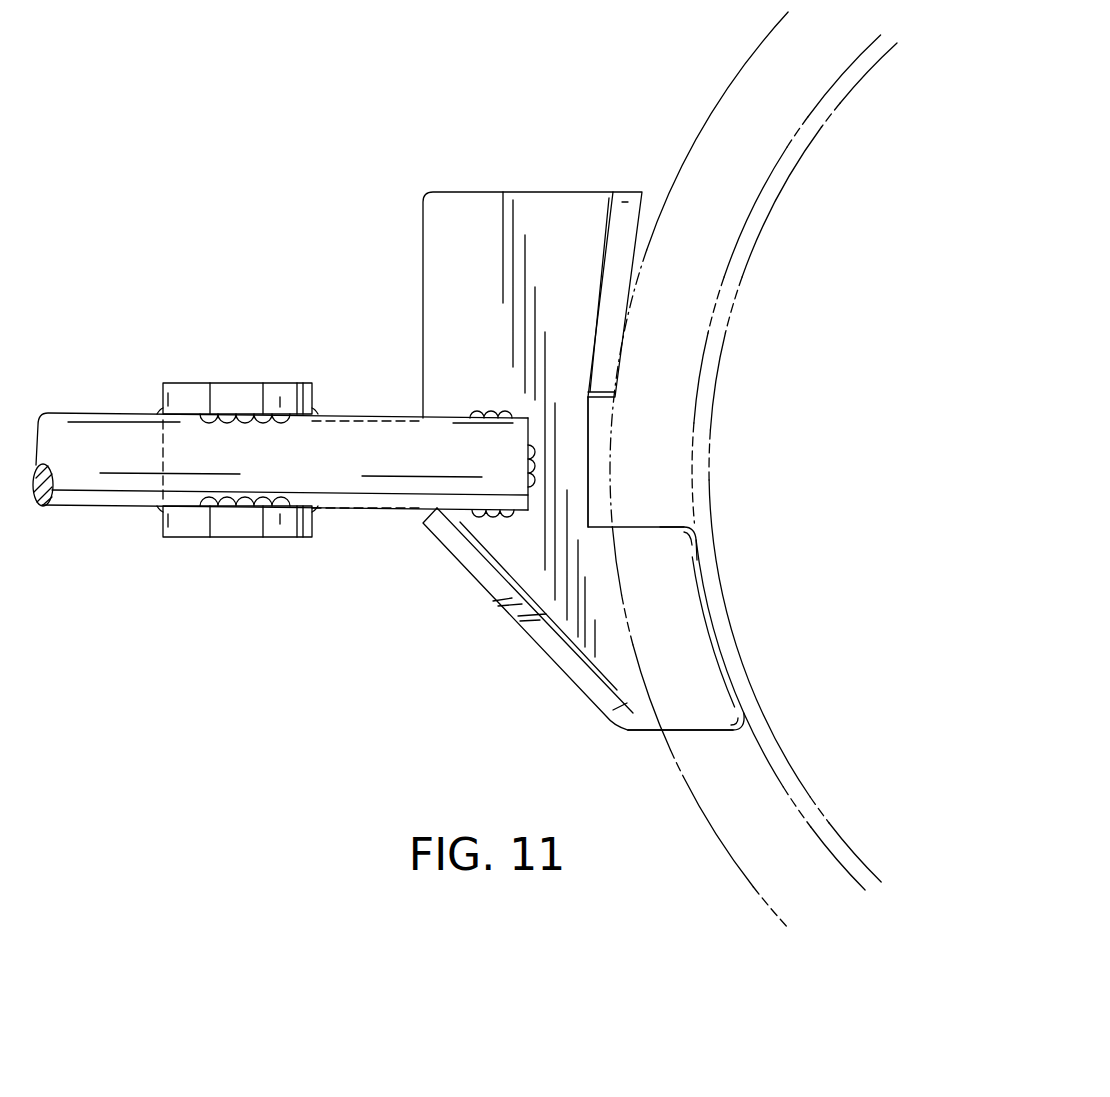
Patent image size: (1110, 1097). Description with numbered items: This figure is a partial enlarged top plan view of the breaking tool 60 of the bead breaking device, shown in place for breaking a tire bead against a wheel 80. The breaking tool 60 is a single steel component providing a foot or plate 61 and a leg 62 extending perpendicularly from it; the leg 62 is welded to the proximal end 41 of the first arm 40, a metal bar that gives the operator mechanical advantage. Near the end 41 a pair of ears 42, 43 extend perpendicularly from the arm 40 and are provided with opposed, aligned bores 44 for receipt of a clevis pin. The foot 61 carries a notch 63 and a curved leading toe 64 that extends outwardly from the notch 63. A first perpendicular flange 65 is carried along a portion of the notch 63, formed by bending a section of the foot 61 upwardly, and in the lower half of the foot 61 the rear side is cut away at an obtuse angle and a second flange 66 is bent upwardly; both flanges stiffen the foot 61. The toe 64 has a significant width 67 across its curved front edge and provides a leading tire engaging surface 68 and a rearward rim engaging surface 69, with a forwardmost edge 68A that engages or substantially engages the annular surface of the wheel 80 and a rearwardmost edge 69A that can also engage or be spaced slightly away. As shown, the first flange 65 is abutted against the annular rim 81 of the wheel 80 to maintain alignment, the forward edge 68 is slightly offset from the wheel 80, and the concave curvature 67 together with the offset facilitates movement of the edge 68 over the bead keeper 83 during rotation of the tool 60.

The first arm 40 is at (77, 509).
The end of arm 41 is at (483, 440).
The ear 42 is at (180, 525).
The ear 43 is at (187, 397).
The bores 44 is at (240, 388).
The breaking tool 60 is at (545, 155).
The foot 61 is at (443, 247).
The leg 62 is at (348, 417).
The notch 63 is at (588, 520).
The curved leading toe 64 is at (683, 618).
The first perpendicular flange 65 is at (610, 315).
The second flange 66 is at (480, 575).
The width of toe 67 is at (723, 643).
The tire engaging surface 68 is at (705, 733).
The forwardmost edge 68A is at (752, 720).
The rim engaging surface 69 is at (657, 527).
The rearwardmost edge 69A is at (698, 535).
The wheel 80 is at (728, 77).
The annular rim 81 is at (695, 133).
The bead keeper 83 is at (837, 860).